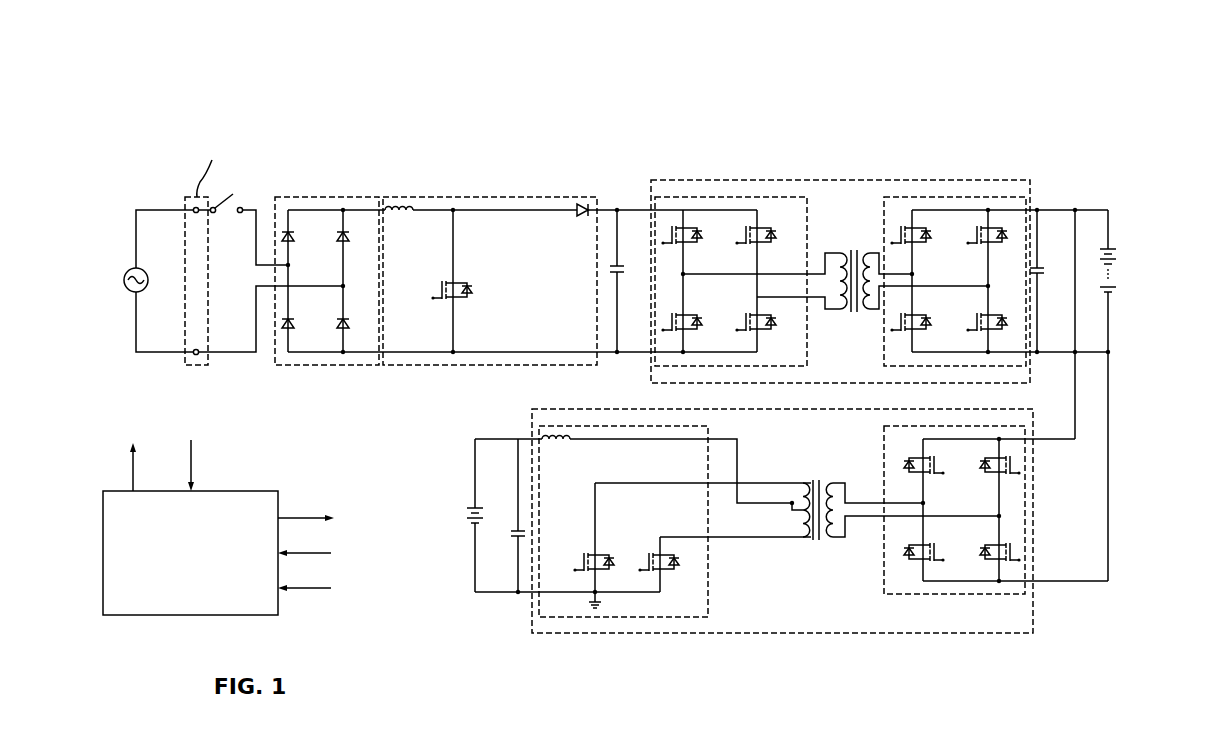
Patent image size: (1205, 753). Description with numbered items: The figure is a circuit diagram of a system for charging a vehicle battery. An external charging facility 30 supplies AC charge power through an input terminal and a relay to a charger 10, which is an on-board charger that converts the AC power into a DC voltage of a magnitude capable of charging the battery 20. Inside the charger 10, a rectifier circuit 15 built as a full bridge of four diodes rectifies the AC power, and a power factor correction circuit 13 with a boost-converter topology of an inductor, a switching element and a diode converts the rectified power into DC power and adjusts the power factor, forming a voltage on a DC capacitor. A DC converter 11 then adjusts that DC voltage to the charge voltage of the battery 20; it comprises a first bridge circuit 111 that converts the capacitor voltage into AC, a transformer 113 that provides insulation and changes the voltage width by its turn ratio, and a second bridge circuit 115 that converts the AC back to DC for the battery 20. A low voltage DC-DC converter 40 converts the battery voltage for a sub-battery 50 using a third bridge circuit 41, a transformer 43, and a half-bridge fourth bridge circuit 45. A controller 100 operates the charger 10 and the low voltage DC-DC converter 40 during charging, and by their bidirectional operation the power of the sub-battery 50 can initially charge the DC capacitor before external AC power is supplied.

The charger 10 is at (867, 103).
The DC converter 11 is at (818, 180).
The power factor correction circuit 13 is at (489, 197).
The rectifier circuit 15 is at (327, 197).
The battery 20 is at (1113, 277).
The external charging facility 30 is at (124, 280).
The low voltage DC-DC converter 40 is at (797, 633).
The third bridge circuit 41 is at (955, 594).
The transformer 43 is at (815, 542).
The fourth bridge circuit 45 is at (665, 617).
The sub-battery 50 is at (465, 510).
The controller 100 is at (268, 491).
The first bridge circuit 111 is at (737, 197).
The transformer 113 is at (851, 252).
The second bridge circuit 115 is at (957, 197).